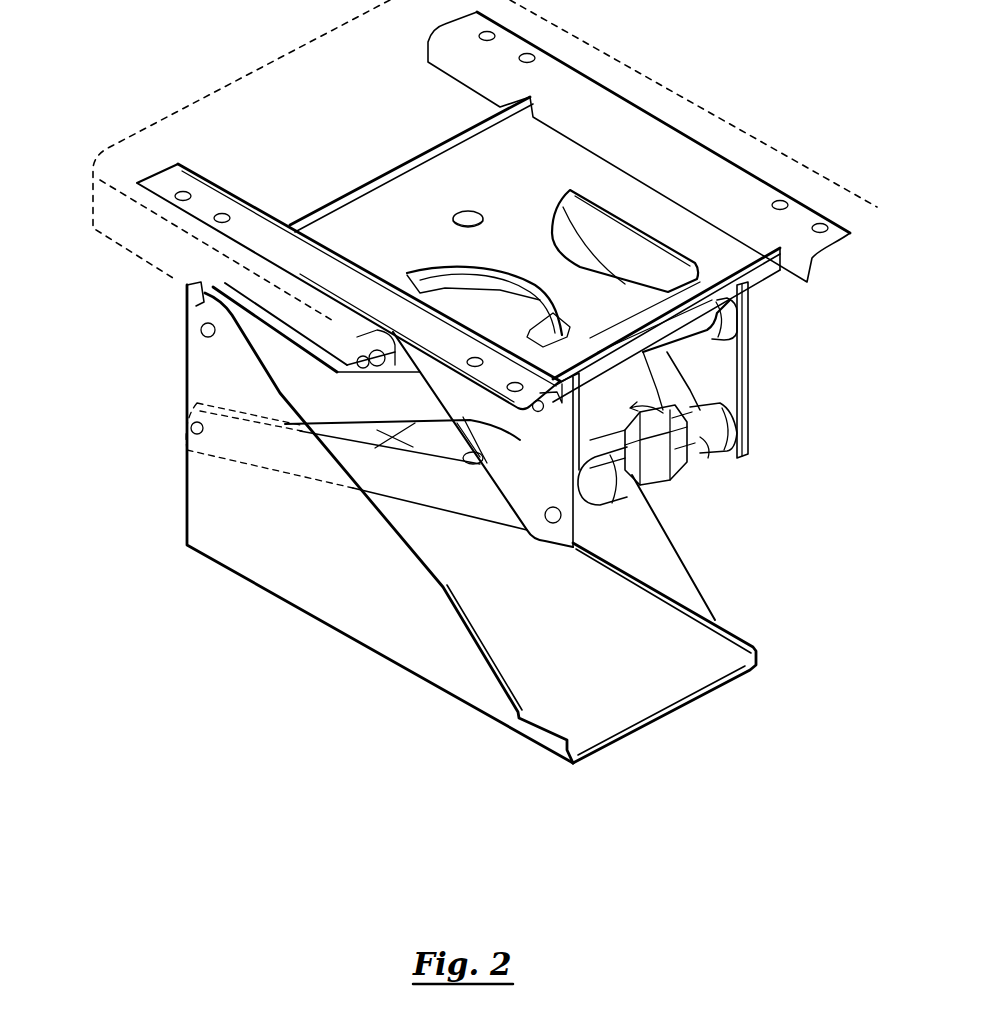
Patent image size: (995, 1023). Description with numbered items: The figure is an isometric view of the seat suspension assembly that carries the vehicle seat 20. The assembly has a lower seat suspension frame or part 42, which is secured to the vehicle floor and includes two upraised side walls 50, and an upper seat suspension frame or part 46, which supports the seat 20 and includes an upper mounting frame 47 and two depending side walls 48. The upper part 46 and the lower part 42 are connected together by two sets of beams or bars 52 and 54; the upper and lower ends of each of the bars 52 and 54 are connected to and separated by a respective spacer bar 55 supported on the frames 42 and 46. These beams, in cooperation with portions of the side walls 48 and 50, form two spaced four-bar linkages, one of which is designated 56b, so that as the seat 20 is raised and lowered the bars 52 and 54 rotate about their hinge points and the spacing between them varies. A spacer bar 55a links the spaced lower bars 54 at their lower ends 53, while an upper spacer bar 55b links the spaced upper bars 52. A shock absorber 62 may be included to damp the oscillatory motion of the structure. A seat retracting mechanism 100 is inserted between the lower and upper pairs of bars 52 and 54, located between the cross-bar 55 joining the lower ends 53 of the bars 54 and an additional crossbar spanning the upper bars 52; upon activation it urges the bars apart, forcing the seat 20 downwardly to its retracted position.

The vehicle seat 20 is at (277, 70).
The lower seat suspension frame 42 is at (278, 538).
The upper seat suspension frame 46 is at (551, 440).
The upper mounting frame 47 is at (212, 193).
The depending side walls 48 is at (710, 360).
The upraised side walls 50 is at (650, 549).
The upper bars 52 is at (655, 290).
The lower ends of bars 53 is at (715, 450).
The lower bars 54 is at (425, 483).
The spacer bar 55 is at (230, 265).
The spacer bar 55a is at (700, 437).
The upper spacer bar 55b is at (705, 320).
The four-bar linkage 56b is at (593, 492).
The shock absorber 62 is at (367, 435).
The seat retracting mechanism 100 is at (678, 440).